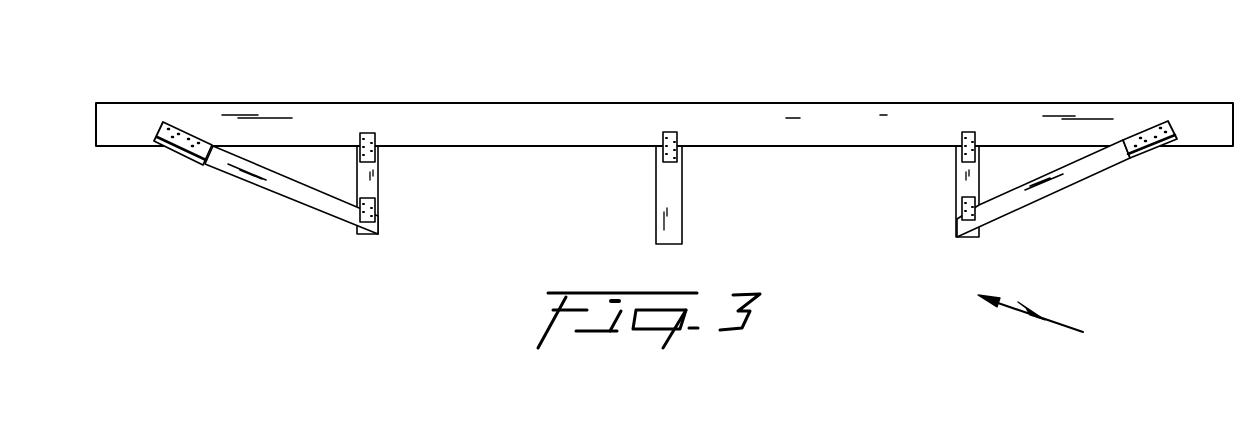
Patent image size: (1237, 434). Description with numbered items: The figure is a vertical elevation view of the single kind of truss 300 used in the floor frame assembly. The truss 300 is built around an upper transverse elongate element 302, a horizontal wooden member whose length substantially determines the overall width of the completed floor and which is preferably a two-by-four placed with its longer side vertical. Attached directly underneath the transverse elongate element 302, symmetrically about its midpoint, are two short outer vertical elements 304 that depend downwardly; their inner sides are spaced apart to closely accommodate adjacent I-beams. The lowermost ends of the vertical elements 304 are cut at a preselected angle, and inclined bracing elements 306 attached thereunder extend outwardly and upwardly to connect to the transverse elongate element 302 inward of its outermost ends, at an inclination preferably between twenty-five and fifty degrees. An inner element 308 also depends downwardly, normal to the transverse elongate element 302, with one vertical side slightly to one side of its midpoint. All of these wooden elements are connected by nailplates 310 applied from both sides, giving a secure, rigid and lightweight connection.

The truss 300 is at (1049, 324).
The upper transverse elongate element 302 is at (475, 114).
The short outer vertical element 304 is at (368, 187).
The inclined bracing element 306 is at (283, 188).
The inner element 308 is at (672, 196).
The nailplate 310 is at (177, 132).